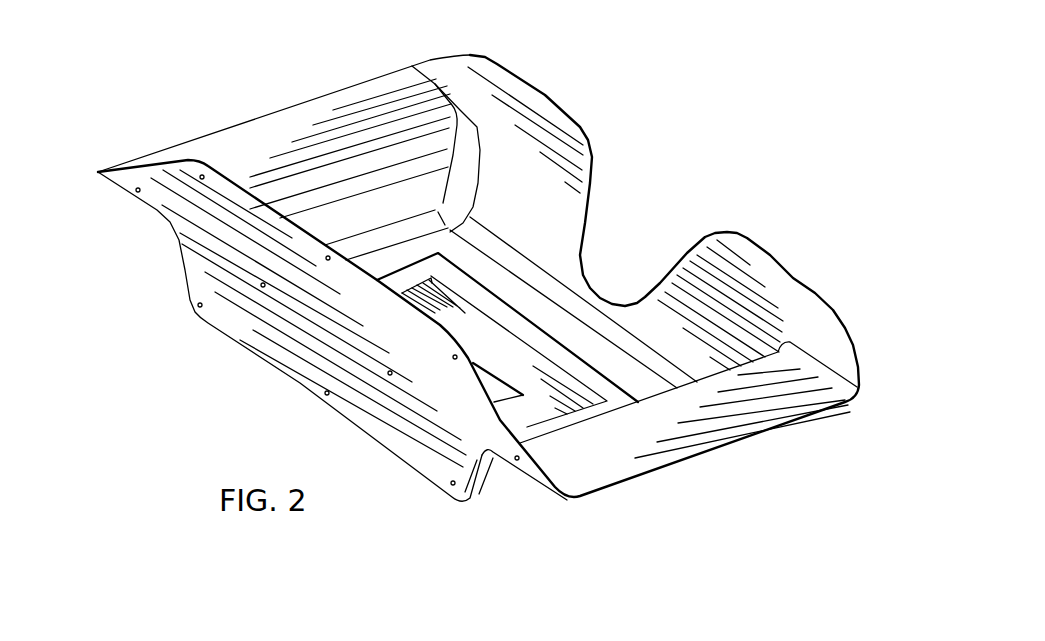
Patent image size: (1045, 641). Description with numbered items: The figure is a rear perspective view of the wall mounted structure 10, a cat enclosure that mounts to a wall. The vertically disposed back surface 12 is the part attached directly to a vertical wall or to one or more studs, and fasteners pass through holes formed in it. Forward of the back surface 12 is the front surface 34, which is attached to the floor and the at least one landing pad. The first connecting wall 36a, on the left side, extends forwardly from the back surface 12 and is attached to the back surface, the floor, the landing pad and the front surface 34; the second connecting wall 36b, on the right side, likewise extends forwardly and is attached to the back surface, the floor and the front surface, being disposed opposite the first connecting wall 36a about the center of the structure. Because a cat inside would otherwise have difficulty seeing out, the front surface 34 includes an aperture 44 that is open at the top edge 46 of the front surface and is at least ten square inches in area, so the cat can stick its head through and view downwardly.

The wall mounted structure 10 is at (782, 71).
The back surface 12 is at (317, 330).
The front surface 34 is at (512, 150).
The first connecting wall 36a is at (508, 478).
The second connecting wall 36b is at (402, 192).
The aperture 44 is at (638, 236).
The top edge 46 is at (556, 108).